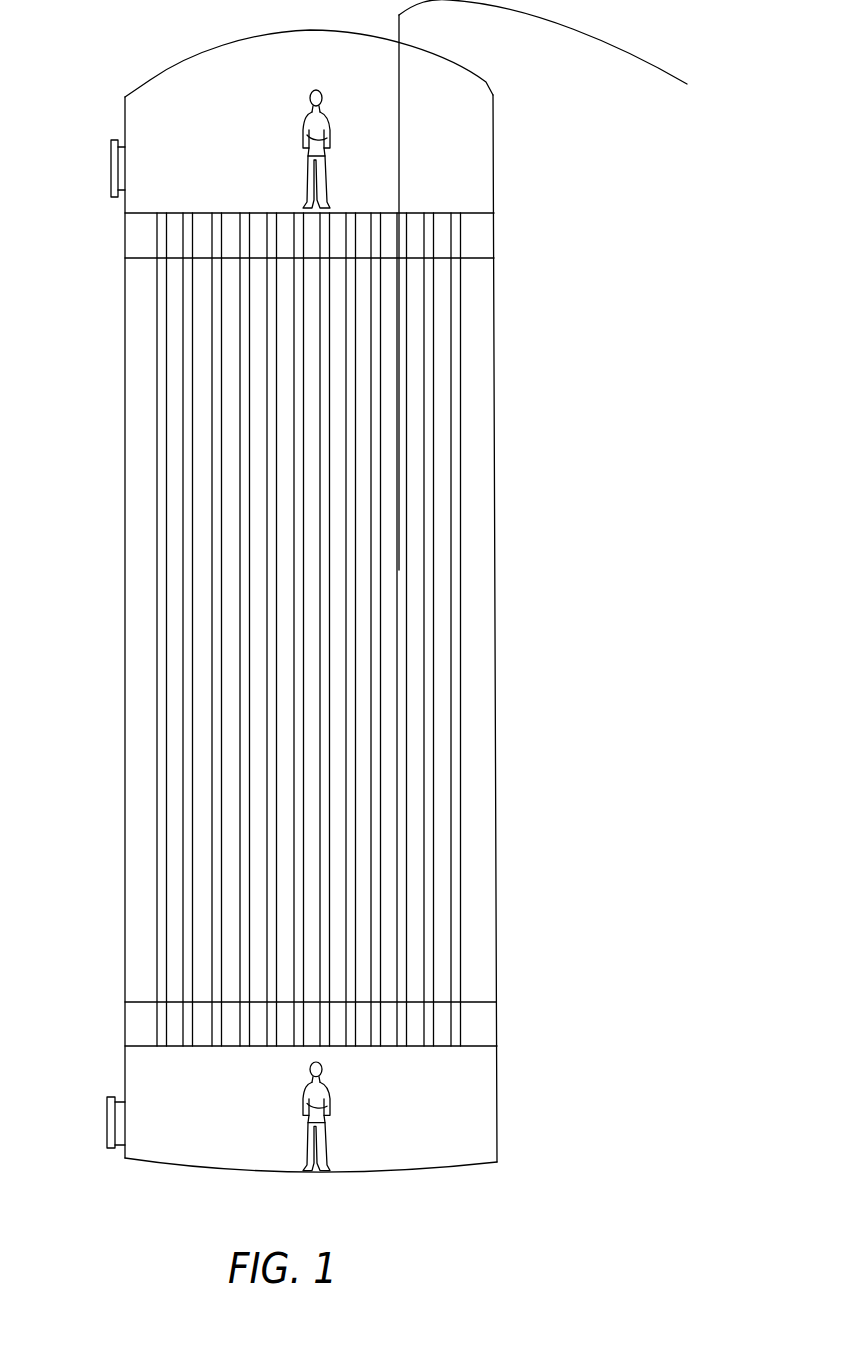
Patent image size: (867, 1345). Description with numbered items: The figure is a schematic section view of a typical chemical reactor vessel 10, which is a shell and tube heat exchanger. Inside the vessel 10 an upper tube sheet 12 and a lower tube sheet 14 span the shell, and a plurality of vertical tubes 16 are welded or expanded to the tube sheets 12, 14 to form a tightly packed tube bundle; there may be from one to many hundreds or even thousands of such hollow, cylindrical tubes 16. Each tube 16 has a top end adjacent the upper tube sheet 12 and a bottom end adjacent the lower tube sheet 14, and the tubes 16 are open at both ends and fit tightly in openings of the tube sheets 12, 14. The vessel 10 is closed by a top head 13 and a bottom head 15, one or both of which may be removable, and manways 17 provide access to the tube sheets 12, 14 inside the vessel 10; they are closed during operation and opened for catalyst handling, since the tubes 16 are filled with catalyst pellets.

The chemical reactor vessel 10 is at (573, 368).
The upper tube sheet 12 is at (494, 232).
The top head 13 is at (165, 65).
The lower tube sheet 14 is at (490, 1022).
The bottom head 15 is at (497, 1162).
The vertical tubes 16 is at (380, 570).
The manways 17 is at (110, 190).